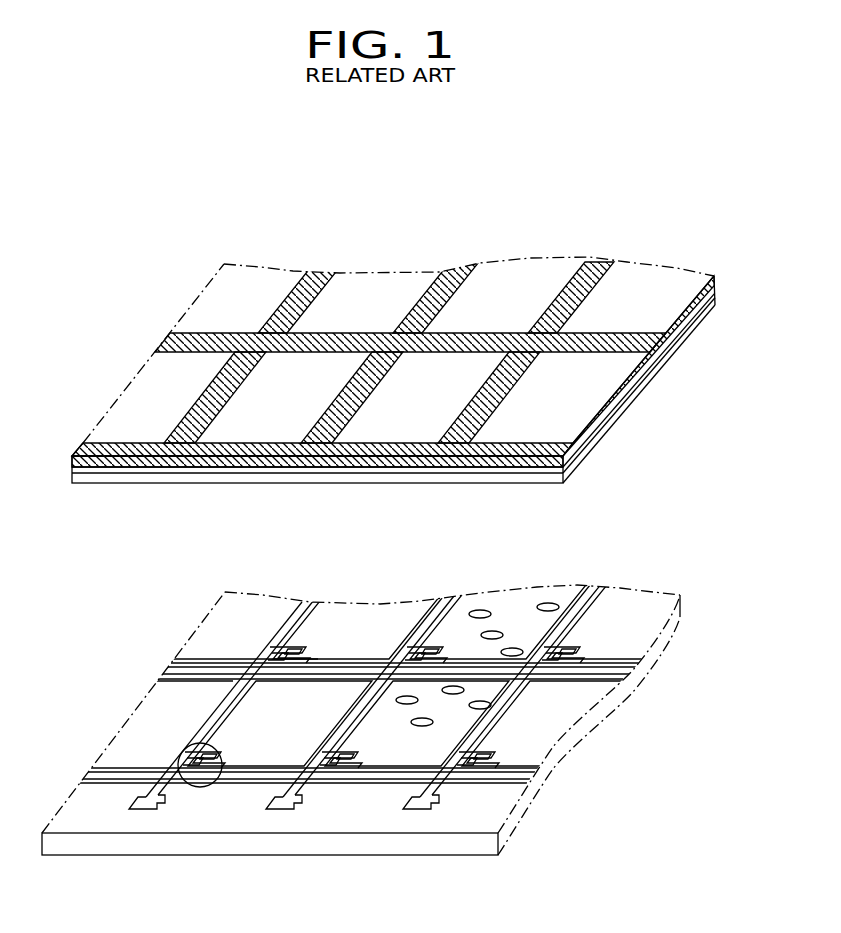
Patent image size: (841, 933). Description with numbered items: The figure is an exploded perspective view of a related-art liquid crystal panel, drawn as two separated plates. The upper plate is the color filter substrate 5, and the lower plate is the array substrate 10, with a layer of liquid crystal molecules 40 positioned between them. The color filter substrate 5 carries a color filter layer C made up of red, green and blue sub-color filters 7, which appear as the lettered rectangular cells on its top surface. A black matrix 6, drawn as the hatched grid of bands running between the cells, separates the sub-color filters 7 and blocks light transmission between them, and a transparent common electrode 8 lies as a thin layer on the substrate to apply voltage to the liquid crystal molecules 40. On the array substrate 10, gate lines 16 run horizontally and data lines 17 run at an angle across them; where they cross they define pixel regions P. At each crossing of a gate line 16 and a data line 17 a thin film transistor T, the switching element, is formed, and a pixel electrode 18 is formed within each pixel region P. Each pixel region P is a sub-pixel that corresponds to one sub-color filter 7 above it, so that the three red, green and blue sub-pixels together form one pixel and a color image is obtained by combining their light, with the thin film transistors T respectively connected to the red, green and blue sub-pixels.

The color filter layer C is at (142, 354).
The color filter substrate 5 is at (542, 472).
The black matrix 6 is at (575, 456).
The sub-color filters 7 is at (605, 382).
The transparent common electrode 8 is at (528, 480).
The array substrate 10 is at (352, 848).
The gate lines 16 is at (402, 780).
The data lines 17 is at (296, 805).
The pixel electrode 18 is at (487, 743).
The thin film transistor T is at (204, 793).
The pixel region P is at (543, 727).
The liquid crystal molecules 40 is at (477, 664).